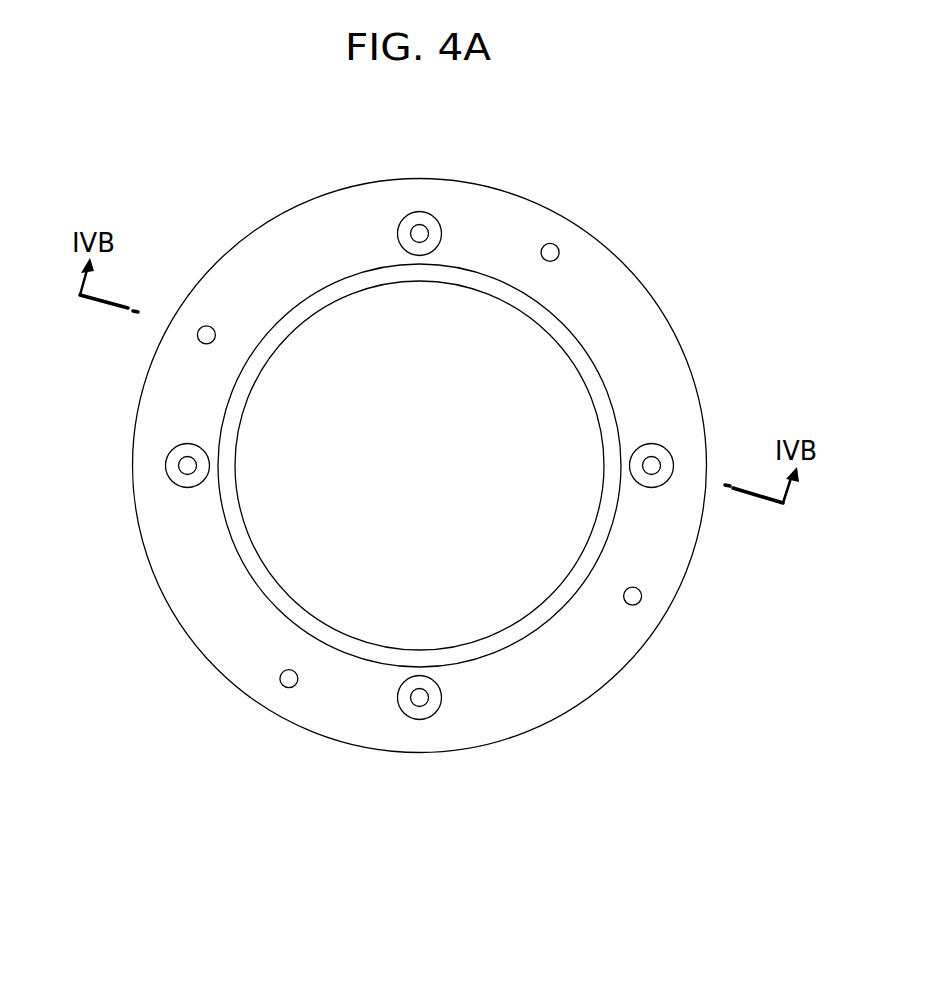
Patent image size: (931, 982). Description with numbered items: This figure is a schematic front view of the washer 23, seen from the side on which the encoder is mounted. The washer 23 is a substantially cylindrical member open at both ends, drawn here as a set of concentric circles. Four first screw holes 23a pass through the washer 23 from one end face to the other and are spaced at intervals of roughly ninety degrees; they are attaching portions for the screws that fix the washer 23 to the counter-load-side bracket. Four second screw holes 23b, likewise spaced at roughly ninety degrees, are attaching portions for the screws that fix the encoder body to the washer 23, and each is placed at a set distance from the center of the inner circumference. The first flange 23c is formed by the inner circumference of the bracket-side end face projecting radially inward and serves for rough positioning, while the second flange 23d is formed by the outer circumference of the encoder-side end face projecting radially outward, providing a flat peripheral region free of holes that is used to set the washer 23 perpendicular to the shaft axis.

The washer 23 is at (694, 184).
The first screw holes 23a is at (418, 232).
The second screw holes 23b is at (551, 251).
The first flange 23c is at (283, 588).
The second flange 23d is at (224, 258).